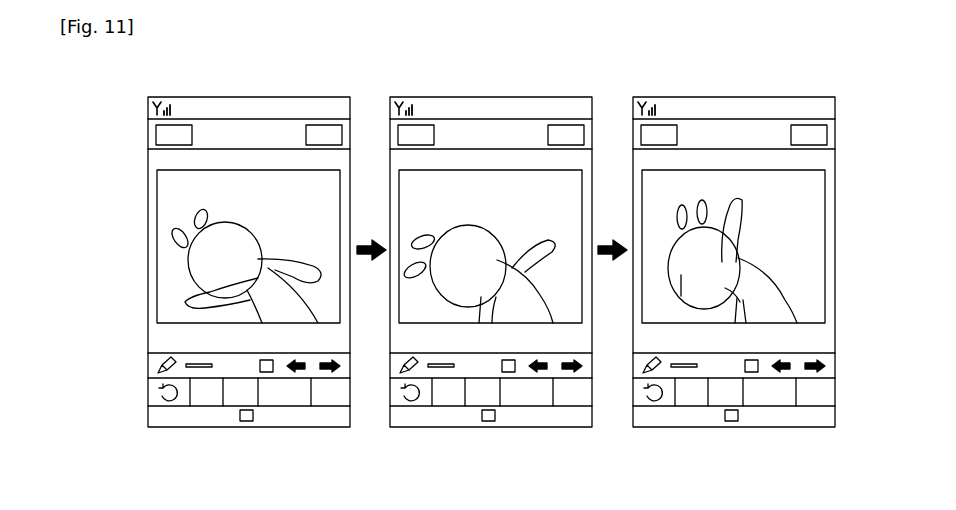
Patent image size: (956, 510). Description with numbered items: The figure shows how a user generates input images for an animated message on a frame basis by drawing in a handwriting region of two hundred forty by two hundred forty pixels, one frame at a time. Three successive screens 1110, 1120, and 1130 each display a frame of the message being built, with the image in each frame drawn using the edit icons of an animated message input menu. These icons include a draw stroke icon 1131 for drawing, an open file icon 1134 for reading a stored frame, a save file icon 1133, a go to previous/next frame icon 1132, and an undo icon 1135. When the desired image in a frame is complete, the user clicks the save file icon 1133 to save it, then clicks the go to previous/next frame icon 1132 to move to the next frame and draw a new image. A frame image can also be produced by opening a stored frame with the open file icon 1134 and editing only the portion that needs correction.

The screen 1110 is at (246, 97).
The screen 1120 is at (488, 97).
The screen 1130 is at (731, 97).
The draw stroke icon 1131 is at (637, 372).
The go to previous/next frame icon 1132 is at (803, 372).
The save file icon 1133 is at (720, 400).
The open file icon 1134 is at (693, 400).
The undo icon 1135 is at (642, 400).